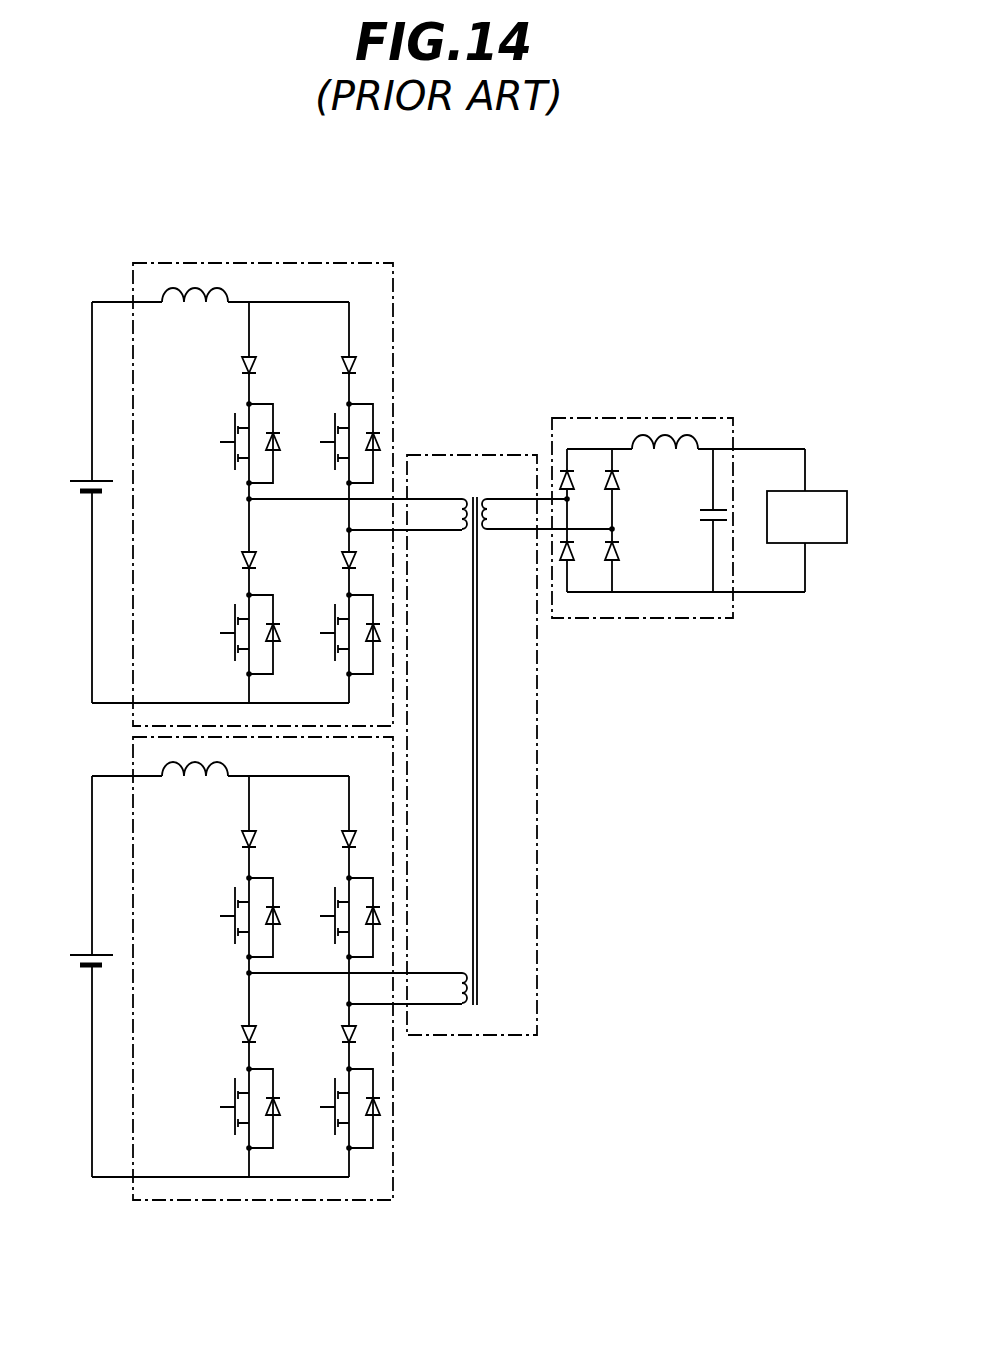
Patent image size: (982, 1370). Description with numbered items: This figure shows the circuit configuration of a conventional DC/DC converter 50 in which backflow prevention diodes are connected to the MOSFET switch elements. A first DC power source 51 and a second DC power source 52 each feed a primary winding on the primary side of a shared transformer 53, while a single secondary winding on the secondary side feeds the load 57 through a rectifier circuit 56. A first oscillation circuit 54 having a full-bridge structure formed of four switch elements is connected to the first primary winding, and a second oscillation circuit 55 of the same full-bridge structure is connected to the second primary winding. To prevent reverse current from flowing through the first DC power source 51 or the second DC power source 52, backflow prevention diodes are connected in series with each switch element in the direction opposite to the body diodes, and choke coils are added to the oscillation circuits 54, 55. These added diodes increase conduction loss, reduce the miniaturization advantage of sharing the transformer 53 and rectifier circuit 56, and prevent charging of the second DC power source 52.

The DC/DC converter 50 is at (531, 203).
The first DC power source 51 is at (82, 473).
The second DC power source 52 is at (80, 948).
The transformer 53 is at (537, 898).
The first oscillation circuit 54 is at (288, 262).
The second oscillation circuit 55 is at (393, 1120).
The rectifier circuit 56 is at (702, 418).
The load 57 is at (830, 491).